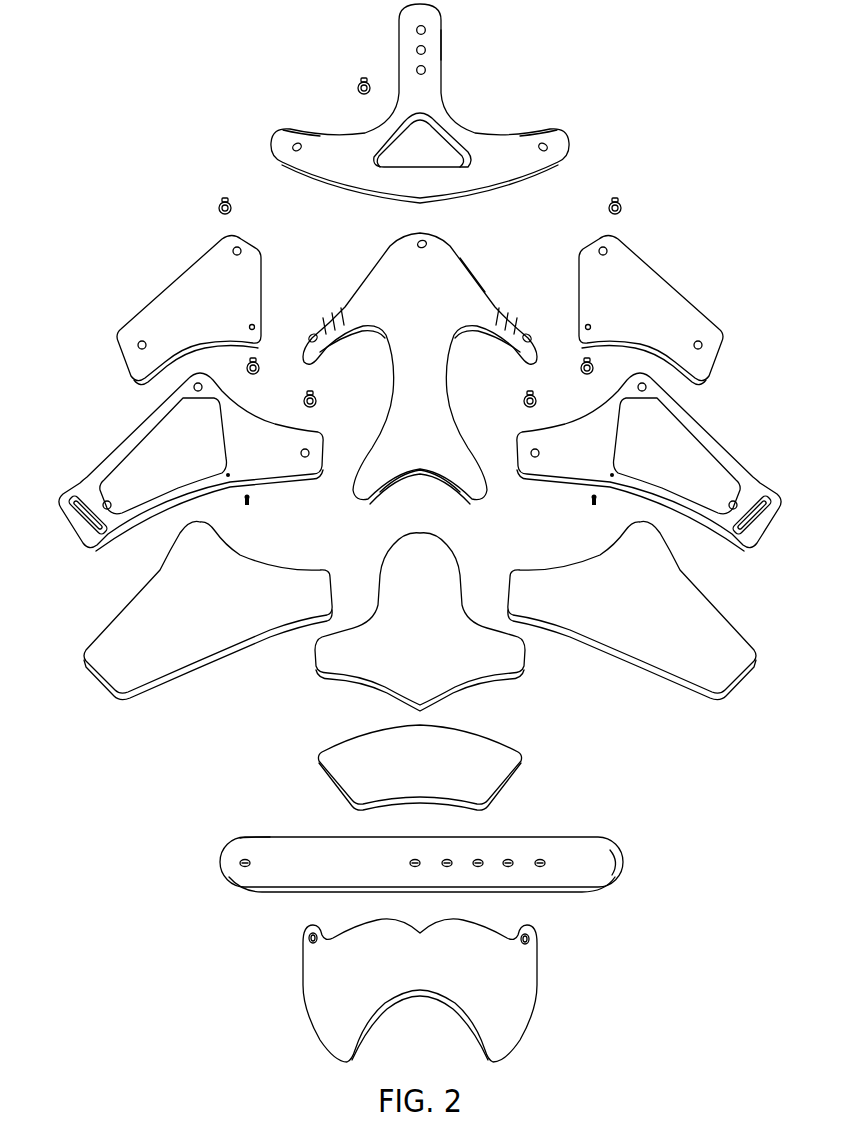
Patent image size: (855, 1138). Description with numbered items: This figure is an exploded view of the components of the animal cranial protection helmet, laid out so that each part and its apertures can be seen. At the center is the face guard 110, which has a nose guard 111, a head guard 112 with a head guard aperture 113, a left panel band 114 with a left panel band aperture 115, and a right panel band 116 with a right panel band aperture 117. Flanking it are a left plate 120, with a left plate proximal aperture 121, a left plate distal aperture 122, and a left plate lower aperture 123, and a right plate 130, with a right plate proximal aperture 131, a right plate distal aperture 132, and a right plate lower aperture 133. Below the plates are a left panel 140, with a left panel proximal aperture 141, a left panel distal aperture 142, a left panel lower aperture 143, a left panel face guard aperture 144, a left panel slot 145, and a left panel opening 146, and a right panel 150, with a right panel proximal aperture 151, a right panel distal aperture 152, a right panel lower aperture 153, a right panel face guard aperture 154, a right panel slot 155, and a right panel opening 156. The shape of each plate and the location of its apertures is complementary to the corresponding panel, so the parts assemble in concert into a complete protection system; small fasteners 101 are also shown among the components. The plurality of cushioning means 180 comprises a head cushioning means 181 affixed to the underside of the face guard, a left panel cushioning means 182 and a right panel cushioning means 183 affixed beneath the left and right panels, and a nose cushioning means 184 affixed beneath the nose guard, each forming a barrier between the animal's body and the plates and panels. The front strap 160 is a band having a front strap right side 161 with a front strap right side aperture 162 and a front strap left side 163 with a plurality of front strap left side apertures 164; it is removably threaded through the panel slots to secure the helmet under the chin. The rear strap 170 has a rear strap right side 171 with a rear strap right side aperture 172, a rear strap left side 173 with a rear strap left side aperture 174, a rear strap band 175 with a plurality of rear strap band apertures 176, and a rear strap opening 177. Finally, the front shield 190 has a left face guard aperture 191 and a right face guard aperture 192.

The fastener screw 101 is at (357, 88).
The face guard 110 is at (420, 366).
The nose guard 111 is at (427, 471).
The head guard 112 is at (452, 283).
The head guard aperture 113 is at (428, 243).
The left panel band 114 is at (497, 316).
The left panel band aperture 115 is at (520, 343).
The right panel band 116 is at (343, 316).
The right panel band aperture 117 is at (320, 343).
The left plate 120 is at (646, 310).
The left plate proximal aperture 121 is at (584, 326).
The left plate distal aperture 122 is at (598, 251).
The left plate lower aperture 123 is at (702, 346).
The right plate 130 is at (194, 310).
The right plate proximal aperture 131 is at (256, 326).
The right plate distal aperture 132 is at (242, 251).
The right plate lower aperture 133 is at (138, 346).
The left panel 140 is at (651, 462).
The left panel proximal aperture 141 is at (611, 478).
The left panel distal aperture 142 is at (647, 387).
The left panel lower aperture 143 is at (737, 504).
The left panel face guard aperture 144 is at (530, 452).
The left panel slot 145 is at (766, 509).
The left panel opening 146 is at (638, 463).
The right panel 150 is at (190, 462).
The right panel proximal aperture 151 is at (229, 478).
The right panel distal aperture 152 is at (193, 387).
The right panel lower aperture 153 is at (103, 504).
The right panel face guard aperture 154 is at (310, 452).
The right panel slot 155 is at (74, 509).
The right panel opening 156 is at (168, 463).
The front strap 160 is at (426, 843).
The front strap right side 161 is at (246, 843).
The front strap right side aperture 162 is at (240, 863).
The front strap left side 163 is at (615, 863).
The front strap left side apertures 164 is at (511, 855).
The rear strap 170 is at (420, 103).
The rear strap right side 171 is at (290, 132).
The rear strap right side aperture 172 is at (292, 147).
The rear strap left side 173 is at (551, 132).
The rear strap left side aperture 174 is at (548, 147).
The rear strap band 175 is at (438, 26).
The rear strap band apertures 176 is at (404, 50).
The rear strap opening 177 is at (403, 156).
The plurality of cushioning means 180 is at (420, 665).
The head cushioning means 181 is at (403, 653).
The left panel cushioning means 182 is at (620, 605).
The right panel cushioning means 183 is at (186, 605).
The nose cushioning means 184 is at (403, 770).
The front shield 190 is at (421, 990).
The left face guard aperture 191 is at (530, 938).
The right face guard aperture 192 is at (308, 938).